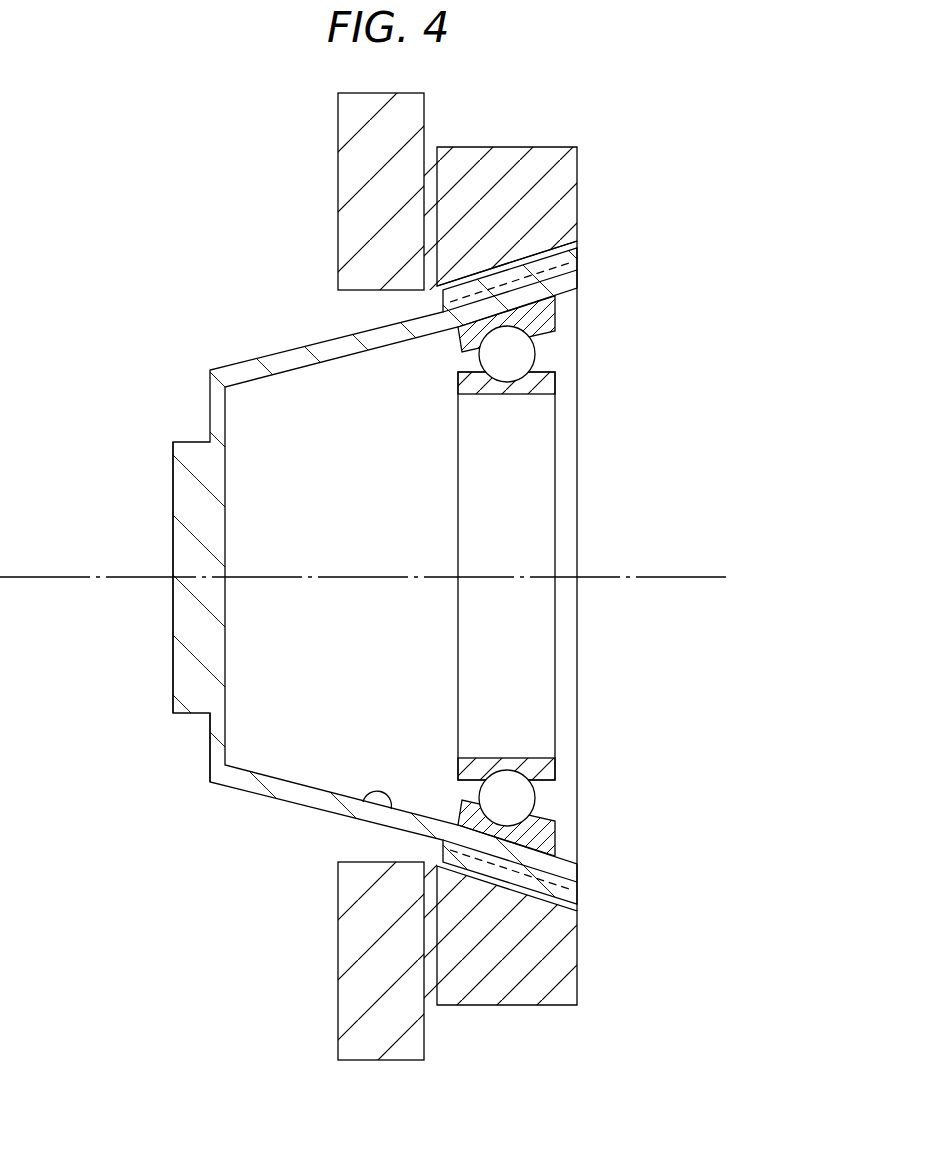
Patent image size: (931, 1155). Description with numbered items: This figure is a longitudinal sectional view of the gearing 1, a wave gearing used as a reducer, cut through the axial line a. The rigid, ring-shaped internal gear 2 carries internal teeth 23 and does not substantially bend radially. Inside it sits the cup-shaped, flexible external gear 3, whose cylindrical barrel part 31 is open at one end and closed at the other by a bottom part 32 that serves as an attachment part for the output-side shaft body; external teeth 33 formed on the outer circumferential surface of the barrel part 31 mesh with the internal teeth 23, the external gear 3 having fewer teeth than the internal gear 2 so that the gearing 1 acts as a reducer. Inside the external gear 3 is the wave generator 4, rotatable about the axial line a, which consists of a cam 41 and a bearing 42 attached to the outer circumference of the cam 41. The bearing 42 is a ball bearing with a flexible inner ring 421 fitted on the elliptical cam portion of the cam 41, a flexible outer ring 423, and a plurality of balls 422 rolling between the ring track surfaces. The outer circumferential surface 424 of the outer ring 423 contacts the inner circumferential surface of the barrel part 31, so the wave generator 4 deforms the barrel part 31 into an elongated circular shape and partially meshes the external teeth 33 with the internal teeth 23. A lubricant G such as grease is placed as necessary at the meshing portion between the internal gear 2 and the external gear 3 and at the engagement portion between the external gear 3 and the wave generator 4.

The gearing 1 is at (786, 174).
The internal gear 2 is at (514, 559).
The external gear 3 is at (377, 576).
The wave generator 4 is at (591, 589).
The internal teeth 23 is at (580, 240).
The barrel part 31 is at (297, 806).
The bottom part 32 is at (183, 683).
The external teeth 33 is at (580, 268).
The cam 41 is at (564, 576).
The bearing 42 is at (591, 589).
The inner ring 421 is at (548, 392).
The balls 422 is at (529, 371).
The outer ring 423 is at (553, 331).
The outer circumferential surface 424 is at (556, 858).
The axial line a is at (707, 575).
The lubricant G is at (553, 822).